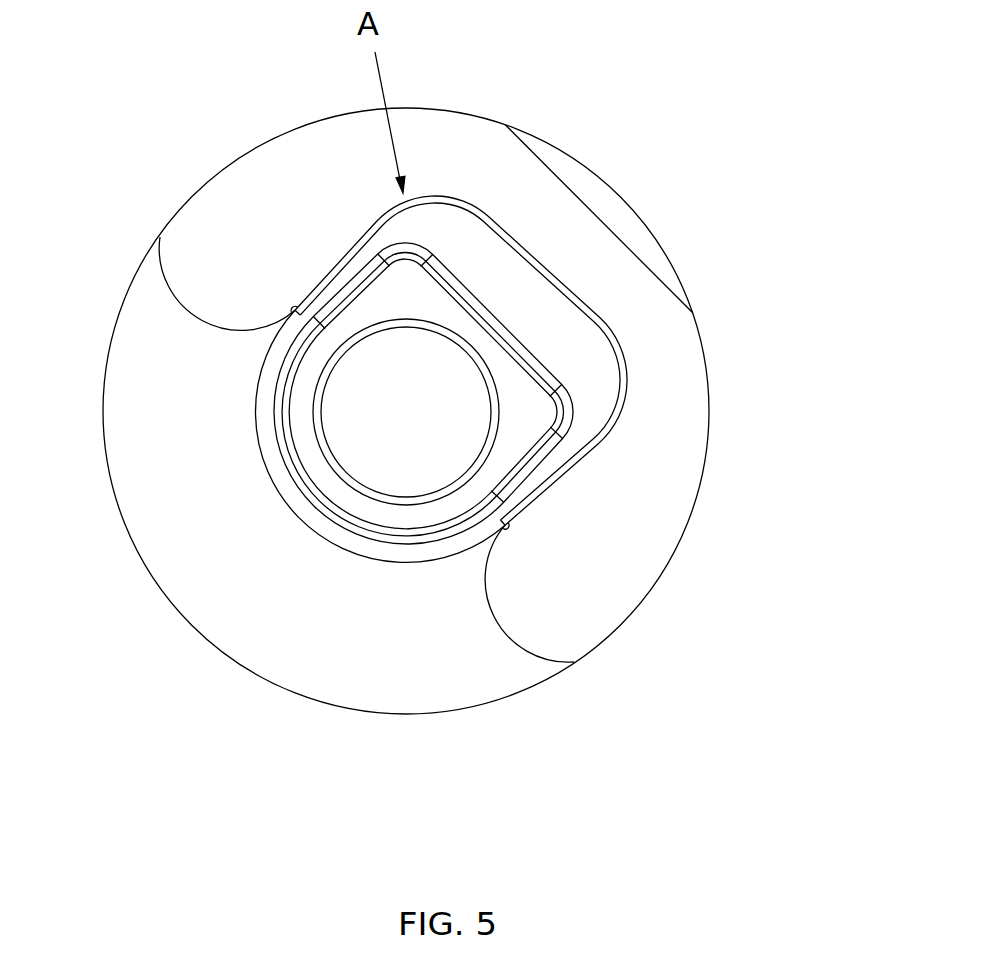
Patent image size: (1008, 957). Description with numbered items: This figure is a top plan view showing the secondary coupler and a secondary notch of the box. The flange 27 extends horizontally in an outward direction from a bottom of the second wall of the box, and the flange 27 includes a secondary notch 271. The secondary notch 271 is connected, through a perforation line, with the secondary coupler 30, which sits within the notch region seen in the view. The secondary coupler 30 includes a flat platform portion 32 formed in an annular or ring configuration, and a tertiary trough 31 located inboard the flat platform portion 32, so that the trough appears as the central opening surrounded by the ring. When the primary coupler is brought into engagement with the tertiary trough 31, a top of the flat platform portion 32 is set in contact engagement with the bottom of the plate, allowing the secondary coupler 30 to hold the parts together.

The flange 27 is at (587, 563).
The secondary notch 271 is at (626, 398).
The secondary coupler 30 is at (283, 496).
The tertiary trough 31 is at (388, 452).
The flat platform portion 32 is at (423, 517).